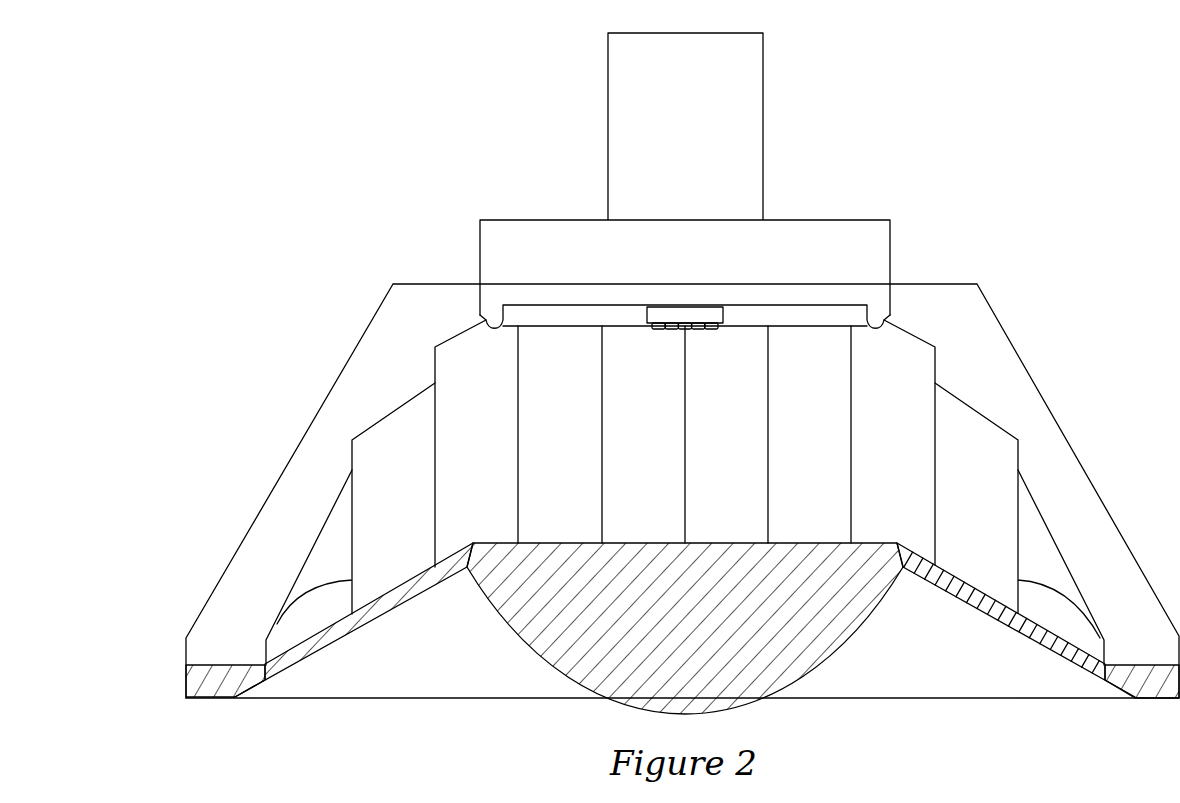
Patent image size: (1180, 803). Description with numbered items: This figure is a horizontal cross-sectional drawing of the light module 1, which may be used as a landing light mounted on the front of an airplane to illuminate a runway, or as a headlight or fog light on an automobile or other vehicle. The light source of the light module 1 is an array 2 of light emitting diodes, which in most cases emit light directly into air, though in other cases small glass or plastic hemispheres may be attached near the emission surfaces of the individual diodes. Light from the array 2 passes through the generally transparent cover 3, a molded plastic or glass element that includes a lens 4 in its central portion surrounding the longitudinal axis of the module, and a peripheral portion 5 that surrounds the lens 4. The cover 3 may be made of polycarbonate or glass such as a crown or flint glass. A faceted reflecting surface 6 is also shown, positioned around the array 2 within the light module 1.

The light module 1 is at (273, 93).
The array of light emitting diodes 2 is at (662, 329).
The cover 3 is at (388, 735).
The lens 4 is at (765, 672).
The peripheral portion 5 is at (923, 675).
The faceted reflecting surface 6 is at (378, 423).